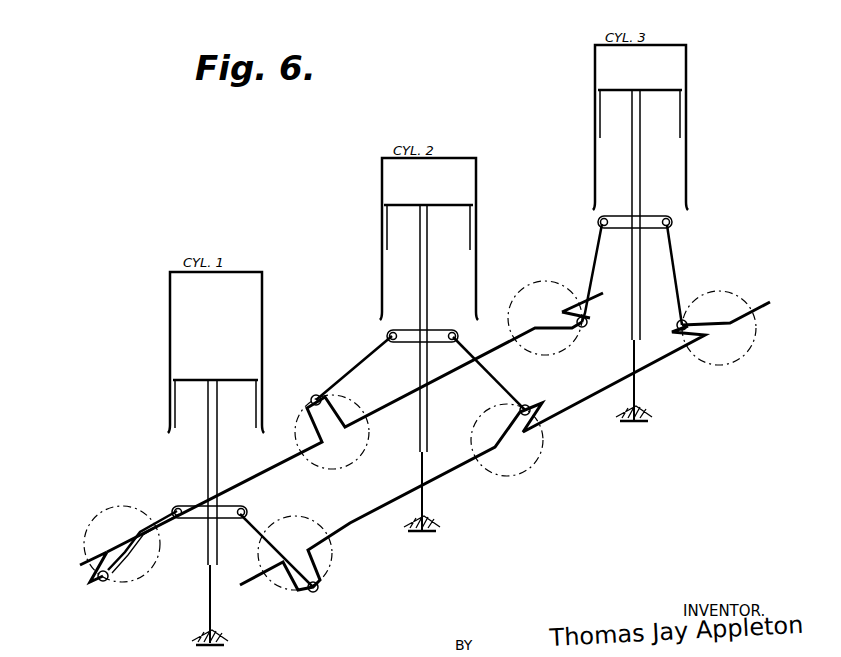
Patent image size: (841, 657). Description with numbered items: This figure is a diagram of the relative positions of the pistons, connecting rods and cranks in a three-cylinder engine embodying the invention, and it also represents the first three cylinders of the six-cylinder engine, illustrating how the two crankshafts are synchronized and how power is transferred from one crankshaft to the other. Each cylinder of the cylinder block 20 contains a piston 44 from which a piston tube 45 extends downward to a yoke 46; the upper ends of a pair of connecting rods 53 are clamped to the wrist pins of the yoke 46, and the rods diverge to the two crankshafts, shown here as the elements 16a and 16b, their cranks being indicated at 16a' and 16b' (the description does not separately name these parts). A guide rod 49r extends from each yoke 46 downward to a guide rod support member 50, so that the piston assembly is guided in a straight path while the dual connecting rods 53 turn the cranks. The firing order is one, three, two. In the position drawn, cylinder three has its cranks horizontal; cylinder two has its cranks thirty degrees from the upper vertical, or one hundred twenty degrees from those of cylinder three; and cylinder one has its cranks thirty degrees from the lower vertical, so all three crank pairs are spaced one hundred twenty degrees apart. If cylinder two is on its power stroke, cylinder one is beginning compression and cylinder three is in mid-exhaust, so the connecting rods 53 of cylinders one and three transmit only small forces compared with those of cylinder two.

The cylinder block 20 is at (262, 308).
The piston 44 is at (185, 380).
The piston tube 45 is at (208, 408).
The yoke 46 is at (236, 505).
The connecting rods 53 is at (143, 546).
The guide rod 49r is at (208, 608).
The guide rod support member 50 is at (228, 640).
The rail 16a is at (341, 437).
The pivot pin 16a' is at (294, 379).
The rail 16b is at (505, 446).
The pivot pin 16b' is at (535, 390).